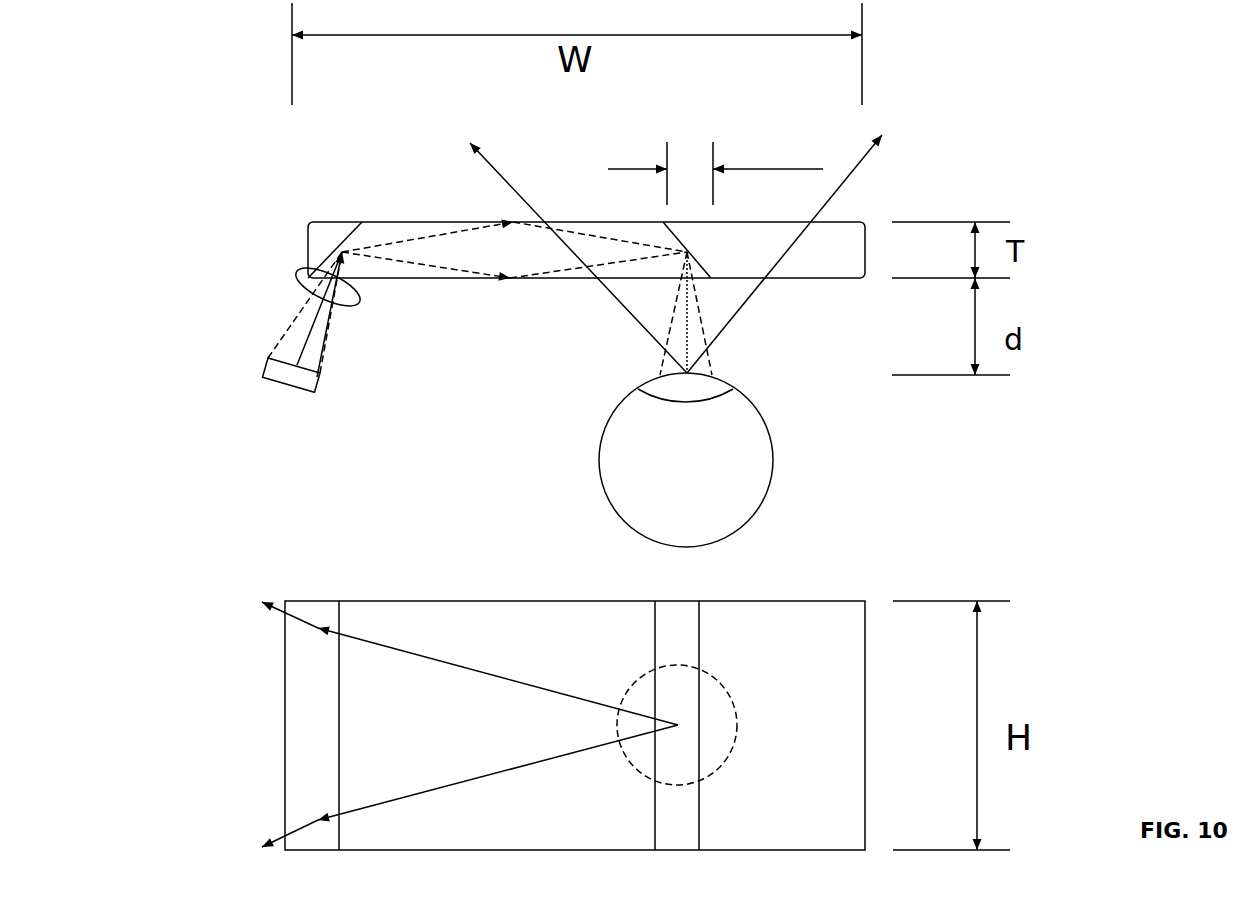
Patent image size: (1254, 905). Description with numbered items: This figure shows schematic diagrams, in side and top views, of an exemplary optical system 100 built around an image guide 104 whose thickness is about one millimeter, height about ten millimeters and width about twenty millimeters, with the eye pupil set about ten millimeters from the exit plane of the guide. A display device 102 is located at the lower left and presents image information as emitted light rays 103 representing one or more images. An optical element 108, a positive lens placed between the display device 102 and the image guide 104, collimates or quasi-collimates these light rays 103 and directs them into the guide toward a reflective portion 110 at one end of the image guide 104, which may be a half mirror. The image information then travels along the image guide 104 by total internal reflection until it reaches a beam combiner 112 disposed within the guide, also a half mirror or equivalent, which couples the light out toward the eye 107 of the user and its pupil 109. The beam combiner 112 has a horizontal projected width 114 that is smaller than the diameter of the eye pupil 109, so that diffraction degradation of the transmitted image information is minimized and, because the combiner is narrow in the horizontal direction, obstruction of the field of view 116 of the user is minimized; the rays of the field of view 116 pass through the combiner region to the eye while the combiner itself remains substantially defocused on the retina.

The optical system 100 is at (257, 123).
The display device 102 is at (268, 357).
The emitted light rays 103 is at (565, 267).
The image guide 104 is at (470, 218).
The eye 107 is at (610, 422).
The optical element 108 is at (305, 277).
The eye pupil 109 is at (652, 382).
The reflective portion 110 is at (318, 230).
The beam combiner 112 is at (700, 258).
The horizontal projected width 114 is at (753, 170).
The field of view 116 is at (747, 305).